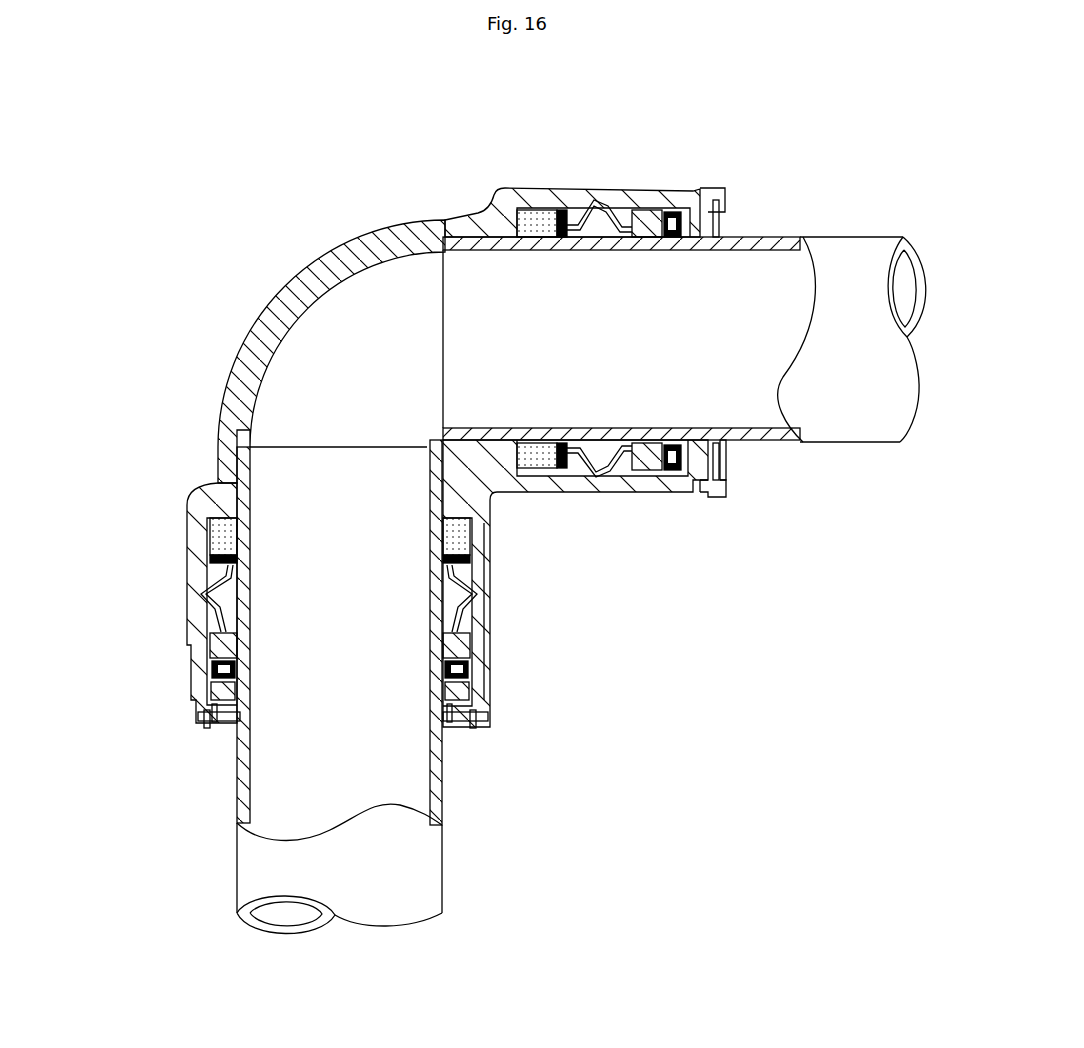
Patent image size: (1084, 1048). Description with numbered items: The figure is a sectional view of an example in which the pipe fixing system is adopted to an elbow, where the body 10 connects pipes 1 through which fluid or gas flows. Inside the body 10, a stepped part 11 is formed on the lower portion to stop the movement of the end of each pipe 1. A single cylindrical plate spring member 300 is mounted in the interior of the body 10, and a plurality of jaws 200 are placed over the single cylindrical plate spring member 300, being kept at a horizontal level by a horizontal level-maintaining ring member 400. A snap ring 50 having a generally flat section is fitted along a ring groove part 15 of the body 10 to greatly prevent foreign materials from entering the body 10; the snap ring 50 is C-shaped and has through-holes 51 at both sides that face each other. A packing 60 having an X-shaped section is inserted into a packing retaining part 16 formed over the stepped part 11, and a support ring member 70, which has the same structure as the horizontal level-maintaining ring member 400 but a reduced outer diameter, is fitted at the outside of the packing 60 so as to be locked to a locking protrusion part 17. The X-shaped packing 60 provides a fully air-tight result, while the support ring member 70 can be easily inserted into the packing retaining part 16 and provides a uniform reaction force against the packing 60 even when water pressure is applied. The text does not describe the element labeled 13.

The pipe 1 is at (833, 237).
The body 10 is at (303, 287).
The stepped part 11 is at (453, 234).
The locking protrusion 13 is at (711, 230).
The ring groove part 15 is at (712, 482).
The packing retaining part 16 is at (472, 542).
The locking protrusion part 17 is at (568, 493).
The snap ring 50 is at (724, 458).
The through-holes 51 is at (727, 452).
The packing 60 is at (540, 216).
The support ring member 70 is at (207, 571).
The jaws 200 is at (662, 213).
The single cylindrical plate spring member 300 is at (617, 212).
The horizontal level-maintaining ring member 400 is at (680, 483).